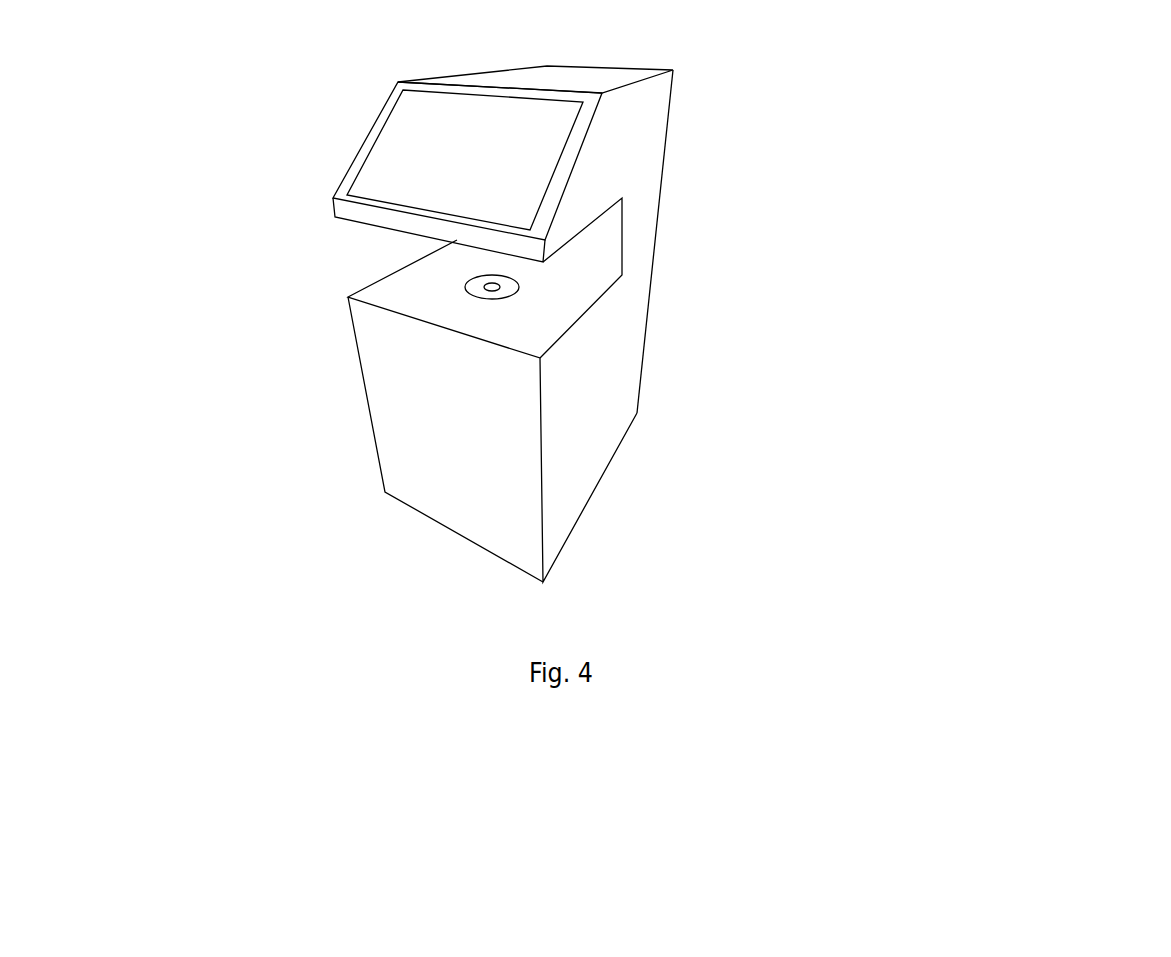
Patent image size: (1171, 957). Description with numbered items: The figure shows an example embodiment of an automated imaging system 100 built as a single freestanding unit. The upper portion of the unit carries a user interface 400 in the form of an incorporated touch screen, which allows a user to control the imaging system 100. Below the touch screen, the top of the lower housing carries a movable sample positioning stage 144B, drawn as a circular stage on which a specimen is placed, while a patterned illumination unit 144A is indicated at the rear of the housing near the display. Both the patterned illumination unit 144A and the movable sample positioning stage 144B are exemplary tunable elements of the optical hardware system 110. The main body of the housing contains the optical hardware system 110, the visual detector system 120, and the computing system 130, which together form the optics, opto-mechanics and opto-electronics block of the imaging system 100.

The automated imaging system 100 is at (770, 73).
The user interface 400 is at (360, 162).
The patterned illumination unit 144A is at (580, 224).
The movable sample positioning stage 144B is at (463, 287).
The optical hardware system 110 is at (743, 411).
The visual detector system 120 is at (743, 411).
The computing system 130 is at (578, 378).